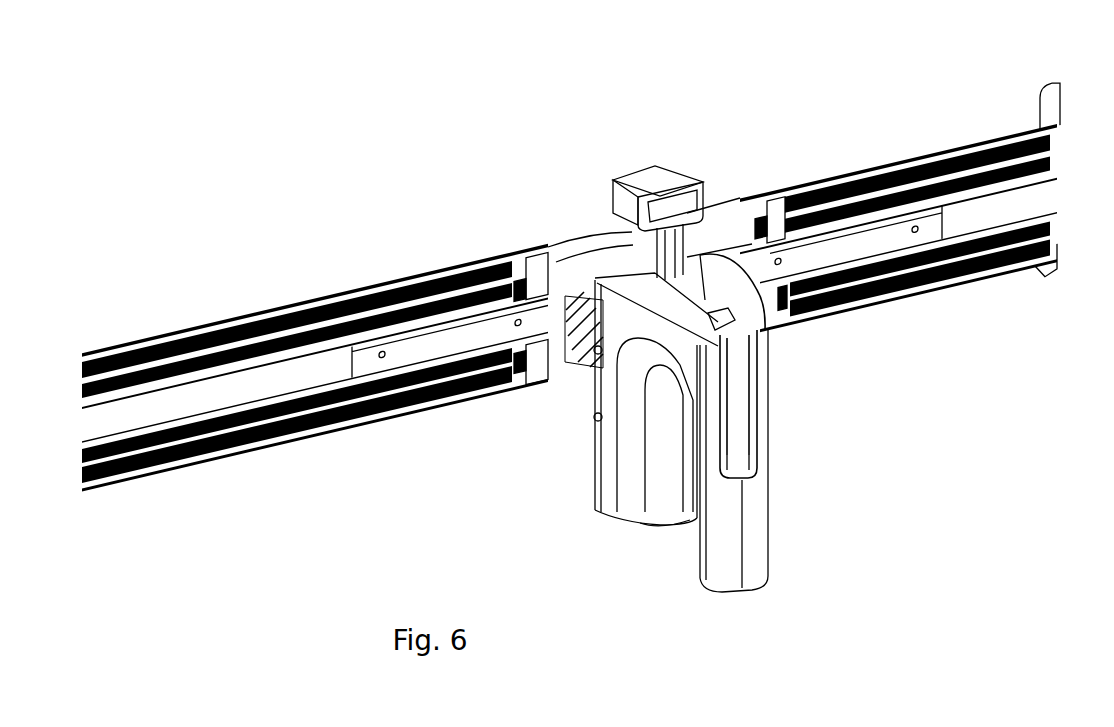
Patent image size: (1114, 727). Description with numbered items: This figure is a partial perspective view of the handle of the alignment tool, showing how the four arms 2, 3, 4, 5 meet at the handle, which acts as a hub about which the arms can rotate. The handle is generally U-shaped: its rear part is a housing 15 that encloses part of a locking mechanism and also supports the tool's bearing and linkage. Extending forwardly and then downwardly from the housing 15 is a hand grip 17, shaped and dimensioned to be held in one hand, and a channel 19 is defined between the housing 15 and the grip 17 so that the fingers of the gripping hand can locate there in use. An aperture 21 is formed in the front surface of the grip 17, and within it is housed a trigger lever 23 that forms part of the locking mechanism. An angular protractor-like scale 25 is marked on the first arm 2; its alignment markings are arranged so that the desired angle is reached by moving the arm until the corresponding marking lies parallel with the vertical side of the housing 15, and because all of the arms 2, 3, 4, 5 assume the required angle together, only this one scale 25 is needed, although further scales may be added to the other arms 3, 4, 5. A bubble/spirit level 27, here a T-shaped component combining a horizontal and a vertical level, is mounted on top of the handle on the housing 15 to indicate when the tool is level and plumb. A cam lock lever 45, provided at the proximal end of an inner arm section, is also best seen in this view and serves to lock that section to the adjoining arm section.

The first arm 2 is at (352, 285).
The second arm 3 is at (885, 158).
The third arm 4 is at (930, 288).
The fourth arm 5 is at (398, 408).
The housing 15 is at (610, 498).
The hand grip 17 is at (765, 502).
The channel 19 is at (680, 540).
The aperture 21 is at (740, 462).
The trigger lever 23 is at (740, 392).
The angular protractor-like scale 25 is at (585, 352).
The bubble/spirit level 27 is at (657, 180).
The cam lock lever 45 is at (757, 222).